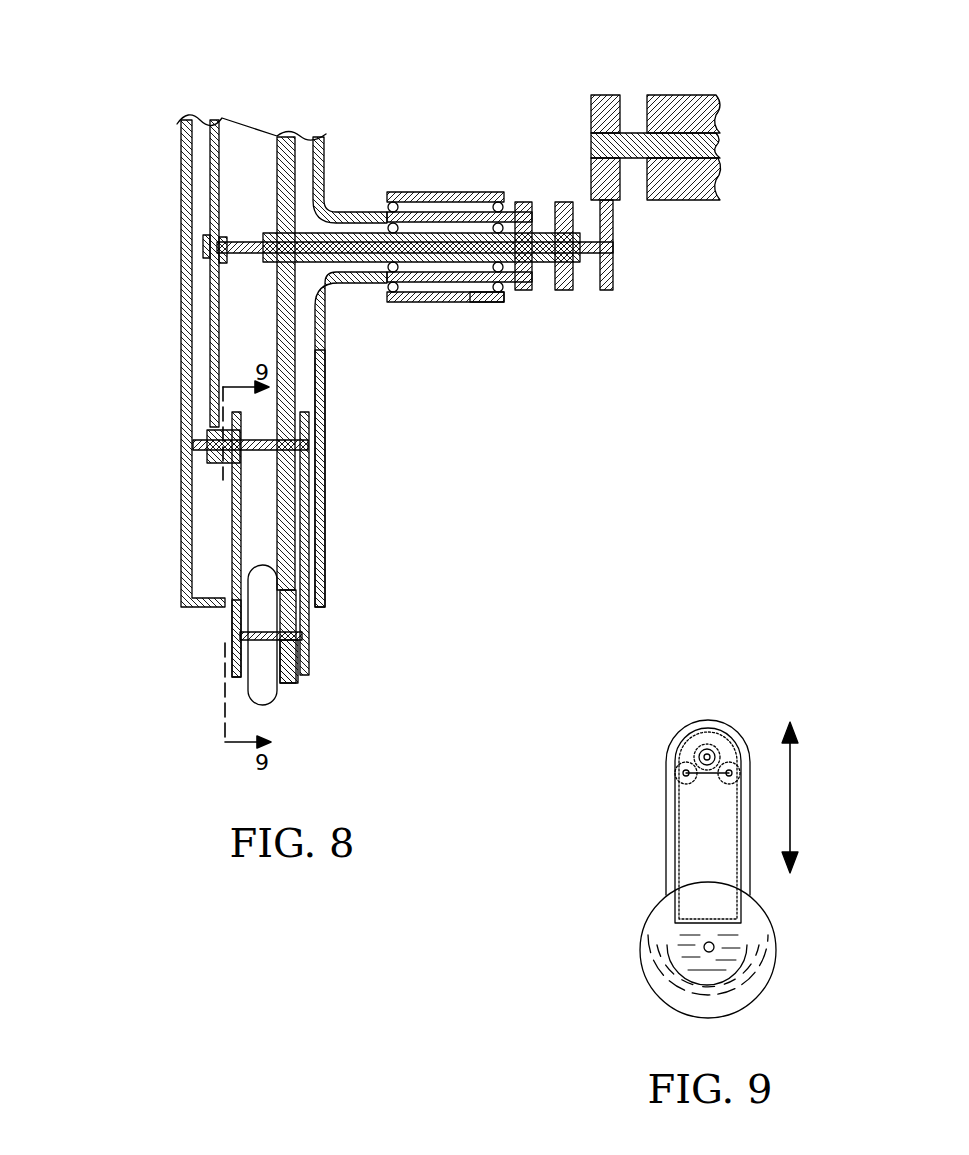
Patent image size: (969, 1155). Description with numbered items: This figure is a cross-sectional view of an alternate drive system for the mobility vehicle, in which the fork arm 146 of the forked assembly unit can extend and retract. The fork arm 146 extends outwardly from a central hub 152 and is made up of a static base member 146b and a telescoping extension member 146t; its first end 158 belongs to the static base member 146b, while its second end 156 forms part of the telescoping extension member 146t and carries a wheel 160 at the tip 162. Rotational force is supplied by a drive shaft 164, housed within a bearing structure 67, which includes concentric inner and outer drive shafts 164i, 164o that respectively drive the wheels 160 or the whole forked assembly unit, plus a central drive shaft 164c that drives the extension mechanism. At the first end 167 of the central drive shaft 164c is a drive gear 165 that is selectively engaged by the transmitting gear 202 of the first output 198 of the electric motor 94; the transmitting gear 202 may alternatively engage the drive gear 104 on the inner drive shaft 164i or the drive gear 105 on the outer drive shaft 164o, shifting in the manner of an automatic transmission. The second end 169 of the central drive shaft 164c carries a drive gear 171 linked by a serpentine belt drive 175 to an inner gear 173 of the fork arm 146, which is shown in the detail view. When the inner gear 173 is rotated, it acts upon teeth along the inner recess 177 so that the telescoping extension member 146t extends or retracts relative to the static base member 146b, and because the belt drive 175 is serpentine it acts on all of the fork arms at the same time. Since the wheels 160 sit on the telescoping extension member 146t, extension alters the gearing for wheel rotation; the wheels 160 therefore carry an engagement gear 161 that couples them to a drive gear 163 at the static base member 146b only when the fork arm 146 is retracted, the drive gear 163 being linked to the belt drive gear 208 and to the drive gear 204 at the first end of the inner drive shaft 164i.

In FIG. 8, the fork arm 146 is at (118, 270).
In FIG. 8, the static base member 146b is at (187, 375).
In FIG. 8, the drive gear 204 is at (274, 200).
In FIG. 8, the second end of the central drive shaft 169 is at (204, 237).
In FIG. 8, the drive gear 171 is at (204, 260).
In FIG. 8, the central hub 152 is at (327, 200).
In FIG. 8, the first end of the fork arm 158 is at (322, 335).
In FIG. 8, the belt drive gear 208 is at (315, 372).
In FIG. 8, the drive shaft 164 is at (469, 220).
In FIG. 8, the outer drive shaft 164o is at (367, 213).
In FIG. 8, the inner drive shaft 164i is at (450, 257).
In FIG. 8, the central drive shaft 164c is at (583, 255).
In FIG. 8, the first end of the central drive shaft 167 is at (614, 243).
In FIG. 8, the drive gear 105 is at (525, 201).
In FIG. 8, the drive gear 104 is at (560, 201).
In FIG. 8, the bearing structure 67 is at (498, 301).
In FIG. 8, the drive gear 165 is at (613, 280).
In FIG. 8, the transmitting gear 202 is at (600, 95).
In FIG. 8, the first output 198 is at (628, 133).
In FIG. 8, the electric motor 94 is at (710, 95).
In FIG. 8, the drive gear 163 is at (288, 530).
In FIG. 8, the telescoping extension member 146t is at (310, 558).
In FIG. 8, the belt drive 175 is at (215, 393).
In FIG. 8, the inner gear 173 is at (208, 463).
In FIG. 9, the inner gear 173 is at (718, 747).
In FIG. 8, the second end of the fork arm 156 is at (237, 638).
In FIG. 8, the tip 162 is at (312, 647).
In FIG. 8, the engagement gear 161 is at (308, 675).
In FIG. 8, the wheel 160 is at (277, 697).
In FIG. 9, the wheel 160 is at (763, 970).
In FIG. 9, the inner recess 177 is at (743, 872).